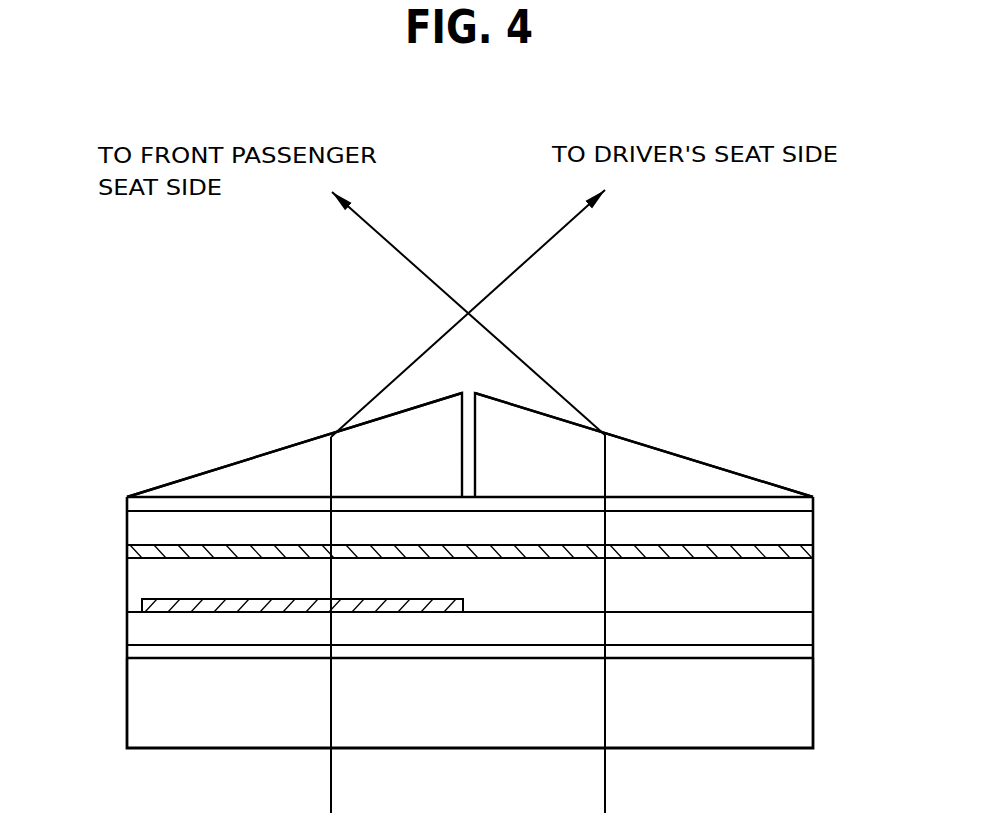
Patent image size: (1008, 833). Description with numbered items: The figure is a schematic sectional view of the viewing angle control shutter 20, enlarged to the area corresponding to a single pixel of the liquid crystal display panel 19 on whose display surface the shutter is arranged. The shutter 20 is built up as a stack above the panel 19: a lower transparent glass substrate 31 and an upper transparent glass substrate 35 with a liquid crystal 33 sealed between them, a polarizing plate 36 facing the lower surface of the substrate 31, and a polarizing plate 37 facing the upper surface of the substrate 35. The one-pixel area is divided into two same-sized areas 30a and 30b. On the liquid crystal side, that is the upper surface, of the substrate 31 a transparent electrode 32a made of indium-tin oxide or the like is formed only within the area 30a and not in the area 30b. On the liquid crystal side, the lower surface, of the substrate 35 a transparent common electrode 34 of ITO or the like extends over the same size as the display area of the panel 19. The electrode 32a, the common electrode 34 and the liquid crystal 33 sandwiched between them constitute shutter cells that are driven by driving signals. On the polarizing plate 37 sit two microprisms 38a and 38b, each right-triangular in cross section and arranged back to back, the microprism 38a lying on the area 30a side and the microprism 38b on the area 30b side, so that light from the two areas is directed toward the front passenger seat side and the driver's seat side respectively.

The liquid crystal display panel 19 is at (135, 707).
The viewing angle control shutter 20 is at (88, 395).
The area 30a is at (468, 378).
The area 30b is at (810, 378).
The transparent glass substrate 31 is at (815, 628).
The transparent electrode 32a is at (463, 605).
The liquid crystal 33 is at (815, 586).
The transparent common electrode 34 is at (690, 560).
The transparent glass substrate 35 is at (815, 530).
The polarizing plate 36 is at (815, 652).
The polarizing plate 37 is at (815, 497).
The microprism 38a is at (288, 462).
The microprism 38b is at (695, 470).